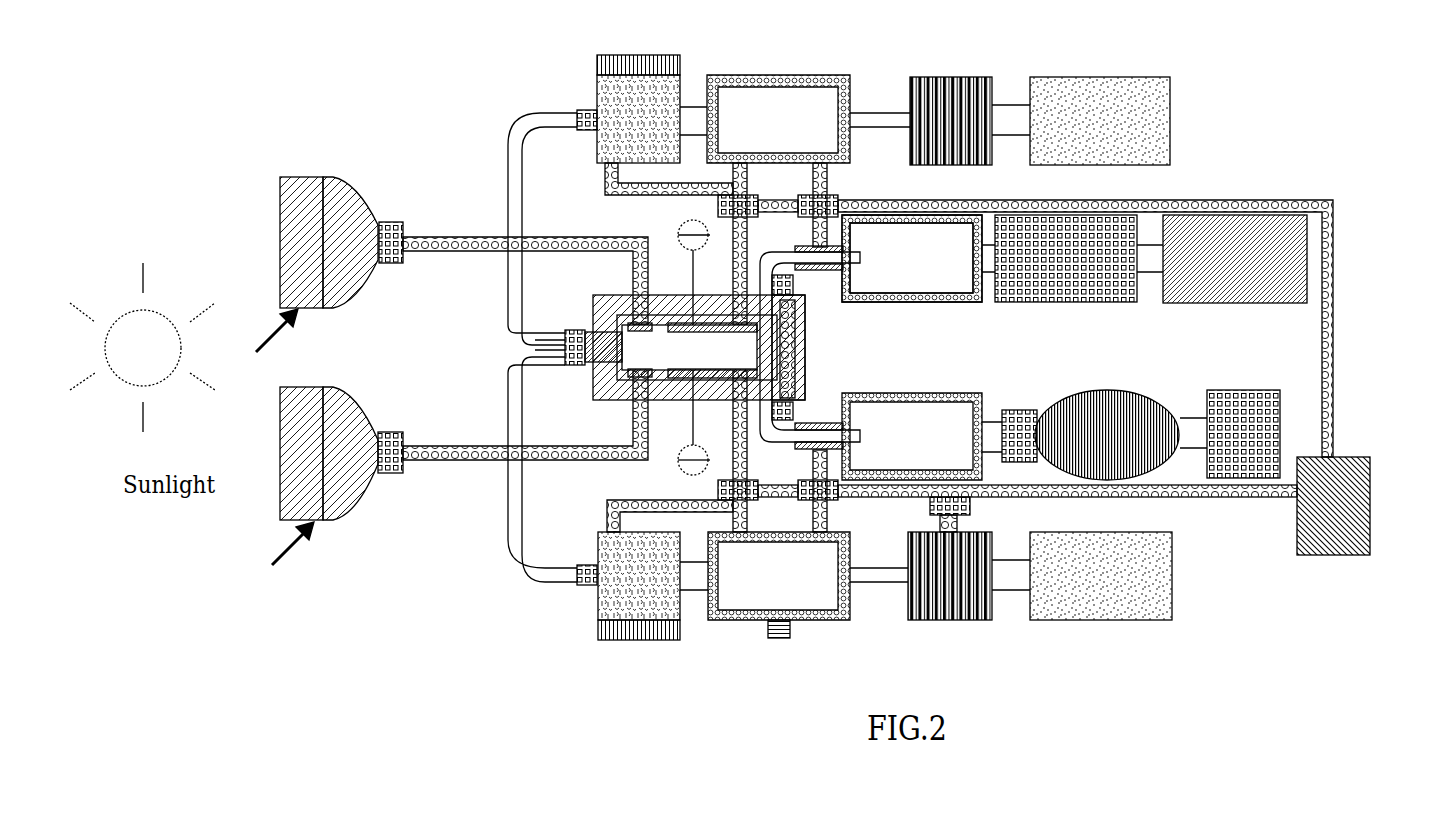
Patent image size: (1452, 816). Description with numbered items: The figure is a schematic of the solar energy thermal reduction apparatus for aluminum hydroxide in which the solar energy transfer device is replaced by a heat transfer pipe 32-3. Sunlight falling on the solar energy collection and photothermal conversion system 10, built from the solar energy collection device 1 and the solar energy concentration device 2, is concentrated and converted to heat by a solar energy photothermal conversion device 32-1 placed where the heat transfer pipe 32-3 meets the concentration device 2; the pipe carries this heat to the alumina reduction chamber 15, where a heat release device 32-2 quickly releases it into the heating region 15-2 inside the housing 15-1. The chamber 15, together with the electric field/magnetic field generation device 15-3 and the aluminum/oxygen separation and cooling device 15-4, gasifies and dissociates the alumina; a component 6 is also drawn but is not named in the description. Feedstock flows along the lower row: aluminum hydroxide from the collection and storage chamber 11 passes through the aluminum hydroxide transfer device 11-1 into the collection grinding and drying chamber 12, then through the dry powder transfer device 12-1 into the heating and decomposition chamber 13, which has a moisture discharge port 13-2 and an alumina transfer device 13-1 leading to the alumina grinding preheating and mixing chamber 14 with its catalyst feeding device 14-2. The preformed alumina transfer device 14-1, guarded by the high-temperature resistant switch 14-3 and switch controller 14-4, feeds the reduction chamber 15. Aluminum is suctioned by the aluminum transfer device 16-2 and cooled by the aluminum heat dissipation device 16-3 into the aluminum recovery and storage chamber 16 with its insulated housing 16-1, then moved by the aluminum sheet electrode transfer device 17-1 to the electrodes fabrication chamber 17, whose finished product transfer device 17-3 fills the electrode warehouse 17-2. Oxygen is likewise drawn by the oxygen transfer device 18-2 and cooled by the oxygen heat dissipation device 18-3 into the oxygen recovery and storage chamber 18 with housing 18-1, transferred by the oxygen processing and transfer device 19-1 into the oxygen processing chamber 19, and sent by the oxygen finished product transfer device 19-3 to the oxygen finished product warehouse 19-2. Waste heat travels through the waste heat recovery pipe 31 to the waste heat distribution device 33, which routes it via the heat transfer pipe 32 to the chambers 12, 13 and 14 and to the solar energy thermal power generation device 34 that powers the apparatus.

The solar energy collection device 1 is at (312, 193).
The solar energy concentration device 2 is at (345, 237).
The temperature gauge 6 is at (628, 336).
The solar energy collection and photothermal conversion system 10 is at (268, 449).
The aluminum hydroxide collection and storage chamber 11 is at (1108, 585).
The aluminum hydroxide transfer device 11-1 is at (1015, 586).
The aluminum hydroxide collection grinding and drying chamber 12 is at (937, 604).
The aluminum hydroxide dry powder transfer device 12-1 is at (880, 583).
The aluminum hydroxide heating and decomposition chamber 13 is at (779, 565).
The alumina transfer device 13-1 is at (702, 588).
The moisture discharge port 13-2 is at (792, 628).
The alumina grinding preheating and mixing chamber 14 is at (620, 580).
The preformed alumina transfer device 14-1 is at (582, 578).
The catalyst feeding device 14-2 is at (626, 632).
The high-temperature resistant switch 14-3 is at (563, 360).
The high-temperature resistant switch controller 14-4 is at (585, 382).
The alumina reduction chamber 15 is at (608, 385).
The housing 15-1 is at (598, 395).
The heating region 15-2 is at (535, 330).
The electric field/magnetic field generation device 15-3 is at (648, 330).
The aluminum/oxygen separation and cooling device 15-4 is at (638, 322).
The aluminum recovery and storage chamber 16 is at (897, 282).
The housing 16-1 is at (930, 299).
The aluminum transfer device 16-2 is at (993, 262).
The aluminum heat dissipation device 16-3 is at (862, 288).
The aluminum sheet electrodes fabrication chamber 17 is at (1336, 210).
The aluminum sheet electrode transfer device 17-1 is at (1100, 229).
The aluminum sheet electrode warehouse 17-2 is at (1290, 258).
The aluminum sheet electrode finished product transfer device 17-3 is at (1157, 259).
The oxygen recovery and storage chamber 18 is at (868, 415).
The housing 18-1 is at (866, 400).
The oxygen transfer device 18-2 is at (822, 418).
The oxygen heat dissipation device 18-3 is at (862, 390).
The oxygen processing chamber 19 is at (1186, 400).
The oxygen processing and transfer device 19-1 is at (1102, 406).
The oxygen finished product warehouse 19-2 is at (1262, 420).
The oxygen finished product transfer device 19-3 is at (1198, 437).
The waste heat recovery pipe 31 is at (731, 234).
The heat transfer pipe 32 is at (636, 192).
The solar energy photothermal conversion device 32-1 is at (388, 219).
The heat release device 32-2 is at (598, 346).
The heat transfer pipe 32-3 is at (433, 252).
The waste heat distribution device 33 is at (715, 206).
The solar energy thermal power generation device 34 is at (1102, 206).